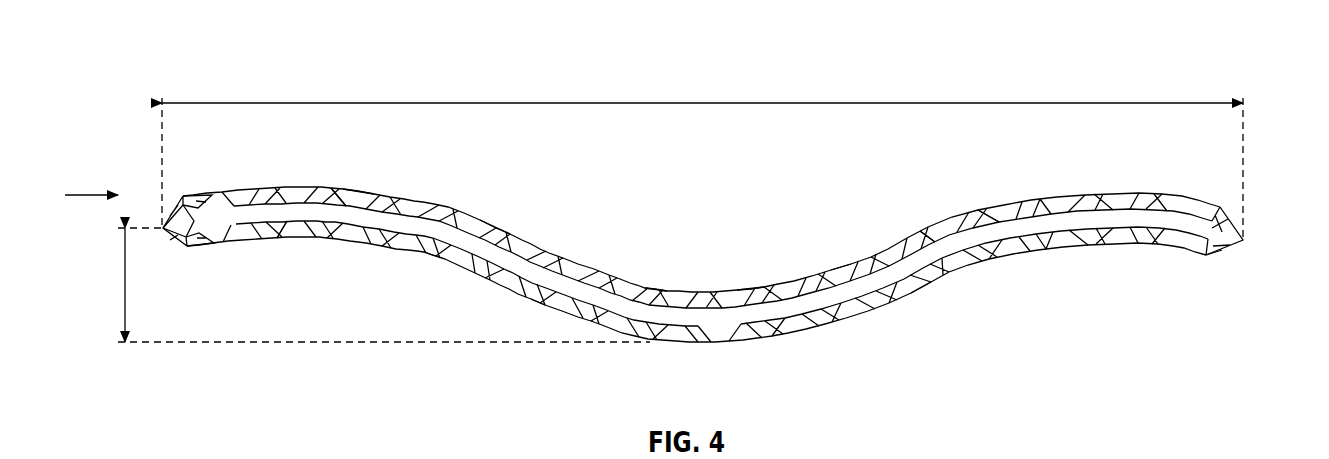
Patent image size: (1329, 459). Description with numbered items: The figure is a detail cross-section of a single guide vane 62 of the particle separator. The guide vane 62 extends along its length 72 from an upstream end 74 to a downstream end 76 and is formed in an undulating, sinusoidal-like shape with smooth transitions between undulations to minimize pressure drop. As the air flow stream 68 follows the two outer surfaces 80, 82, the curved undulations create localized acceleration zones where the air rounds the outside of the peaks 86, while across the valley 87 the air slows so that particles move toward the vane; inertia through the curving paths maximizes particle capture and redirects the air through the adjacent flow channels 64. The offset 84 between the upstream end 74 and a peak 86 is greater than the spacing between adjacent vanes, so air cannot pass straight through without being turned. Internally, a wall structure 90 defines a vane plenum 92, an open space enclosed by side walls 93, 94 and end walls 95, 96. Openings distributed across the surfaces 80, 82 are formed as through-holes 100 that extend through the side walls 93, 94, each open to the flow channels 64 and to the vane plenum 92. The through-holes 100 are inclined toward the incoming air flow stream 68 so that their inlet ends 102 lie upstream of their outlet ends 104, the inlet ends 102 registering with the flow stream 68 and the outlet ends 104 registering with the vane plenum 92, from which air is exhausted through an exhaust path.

The guide vane 62 is at (351, 272).
The flow channels 64 is at (375, 189).
The air flow stream 68 is at (97, 192).
The length 72 is at (703, 100).
The upstream end 74 is at (175, 242).
The downstream end 76 is at (1247, 240).
The surface 80 is at (753, 294).
The surface 82 is at (435, 258).
The offset 84 is at (122, 290).
The peak 86 is at (701, 269).
The valley 87 is at (655, 291).
The wall structure 90 is at (512, 226).
The vane plenum 92 is at (537, 287).
The side wall 93 is at (836, 272).
The side wall 94 is at (913, 294).
The end wall 95 is at (170, 222).
The end wall 96 is at (1226, 254).
The through-holes 100 is at (437, 210).
The inlet ends 102 is at (307, 240).
The outlet ends 104 is at (345, 207).